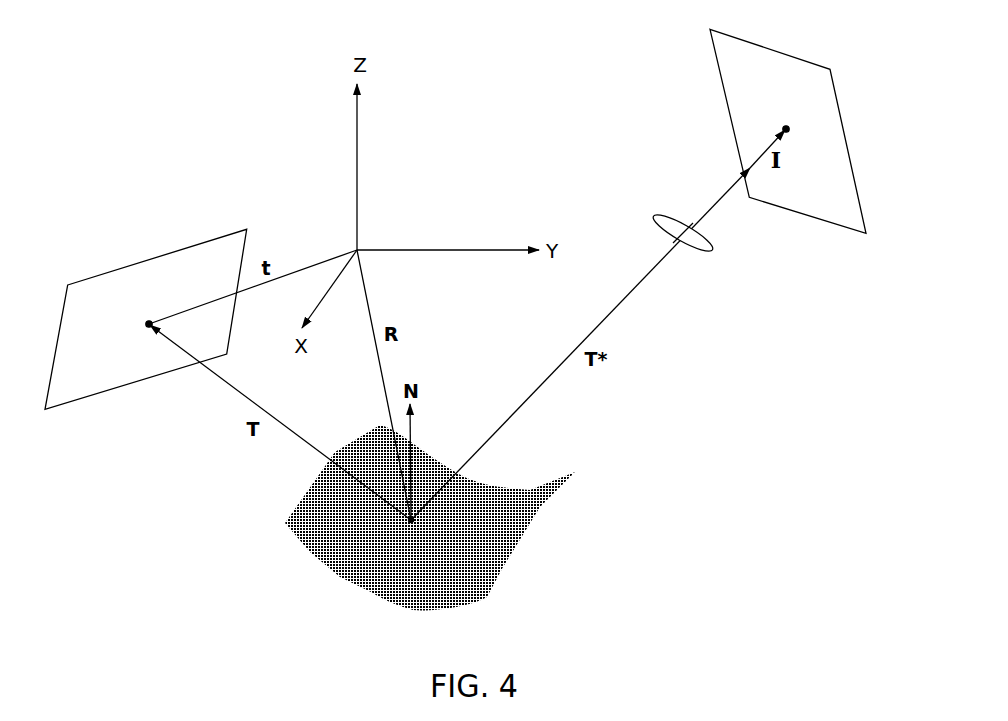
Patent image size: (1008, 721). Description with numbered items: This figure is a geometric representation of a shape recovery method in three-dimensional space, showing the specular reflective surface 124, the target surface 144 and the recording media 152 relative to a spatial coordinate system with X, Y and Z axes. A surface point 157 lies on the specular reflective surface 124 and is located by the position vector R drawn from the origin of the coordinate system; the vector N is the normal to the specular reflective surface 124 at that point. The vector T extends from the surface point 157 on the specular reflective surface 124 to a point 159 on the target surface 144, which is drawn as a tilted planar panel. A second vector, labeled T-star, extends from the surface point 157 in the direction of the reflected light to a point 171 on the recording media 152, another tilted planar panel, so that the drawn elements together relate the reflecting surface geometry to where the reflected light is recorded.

The specular reflective surface 124 is at (497, 493).
The target surface 144 is at (197, 243).
The recording media 152 is at (778, 49).
The surface point 157 is at (411, 520).
The point on the target surface 159 is at (148, 321).
The point on the recording media 171 is at (788, 128).